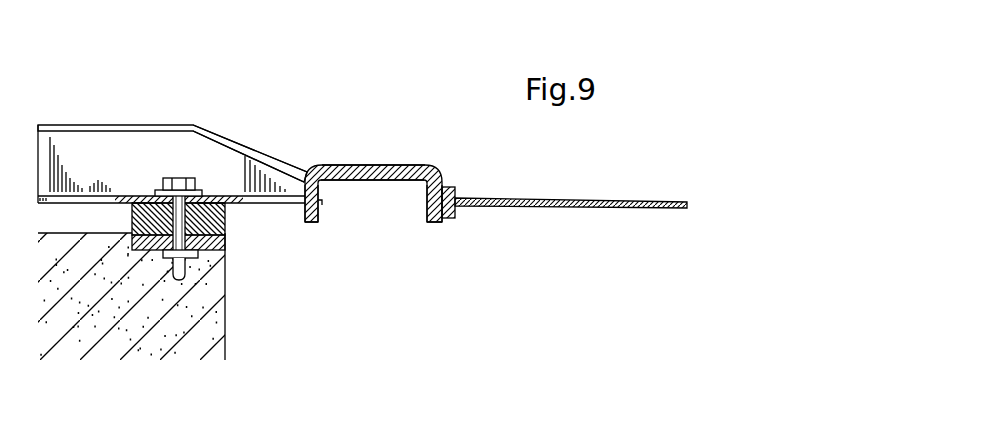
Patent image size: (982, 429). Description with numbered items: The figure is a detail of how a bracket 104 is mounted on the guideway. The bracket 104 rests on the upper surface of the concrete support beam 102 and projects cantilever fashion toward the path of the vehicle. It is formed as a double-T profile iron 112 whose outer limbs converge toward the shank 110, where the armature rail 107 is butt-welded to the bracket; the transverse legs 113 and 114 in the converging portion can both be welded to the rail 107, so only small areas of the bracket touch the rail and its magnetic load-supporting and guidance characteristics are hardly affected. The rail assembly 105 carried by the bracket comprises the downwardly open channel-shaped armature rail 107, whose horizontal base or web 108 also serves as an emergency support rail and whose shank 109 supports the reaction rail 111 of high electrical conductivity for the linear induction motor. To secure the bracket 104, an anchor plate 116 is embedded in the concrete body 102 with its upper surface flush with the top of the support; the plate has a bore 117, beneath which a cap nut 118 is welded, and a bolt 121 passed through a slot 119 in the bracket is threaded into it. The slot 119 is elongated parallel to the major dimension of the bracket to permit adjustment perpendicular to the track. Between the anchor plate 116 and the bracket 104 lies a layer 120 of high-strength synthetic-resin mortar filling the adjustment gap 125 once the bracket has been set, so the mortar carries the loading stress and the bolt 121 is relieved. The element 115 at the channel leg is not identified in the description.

The support beam 102 is at (215, 335).
The bracket 104 is at (97, 128).
The rail assembly 105 is at (441, 148).
The armature rail 107 is at (335, 160).
The web 108 is at (385, 165).
The shank of armature rail 109 is at (437, 225).
The shank of bracket 110 is at (310, 225).
The reaction rail 111 is at (553, 198).
The double-T profile iron 112 is at (130, 142).
The transverse leg 113 is at (258, 158).
The transverse leg 114 is at (272, 204).
The notch 115 is at (320, 200).
The anchor plate 116 is at (225, 245).
The bore 117 is at (172, 245).
The cap nut 118 is at (190, 262).
The slot 119 is at (205, 197).
The mortar layer 120 is at (140, 197).
The bolt 121 is at (178, 184).
The adjustment gap 125 is at (96, 211).